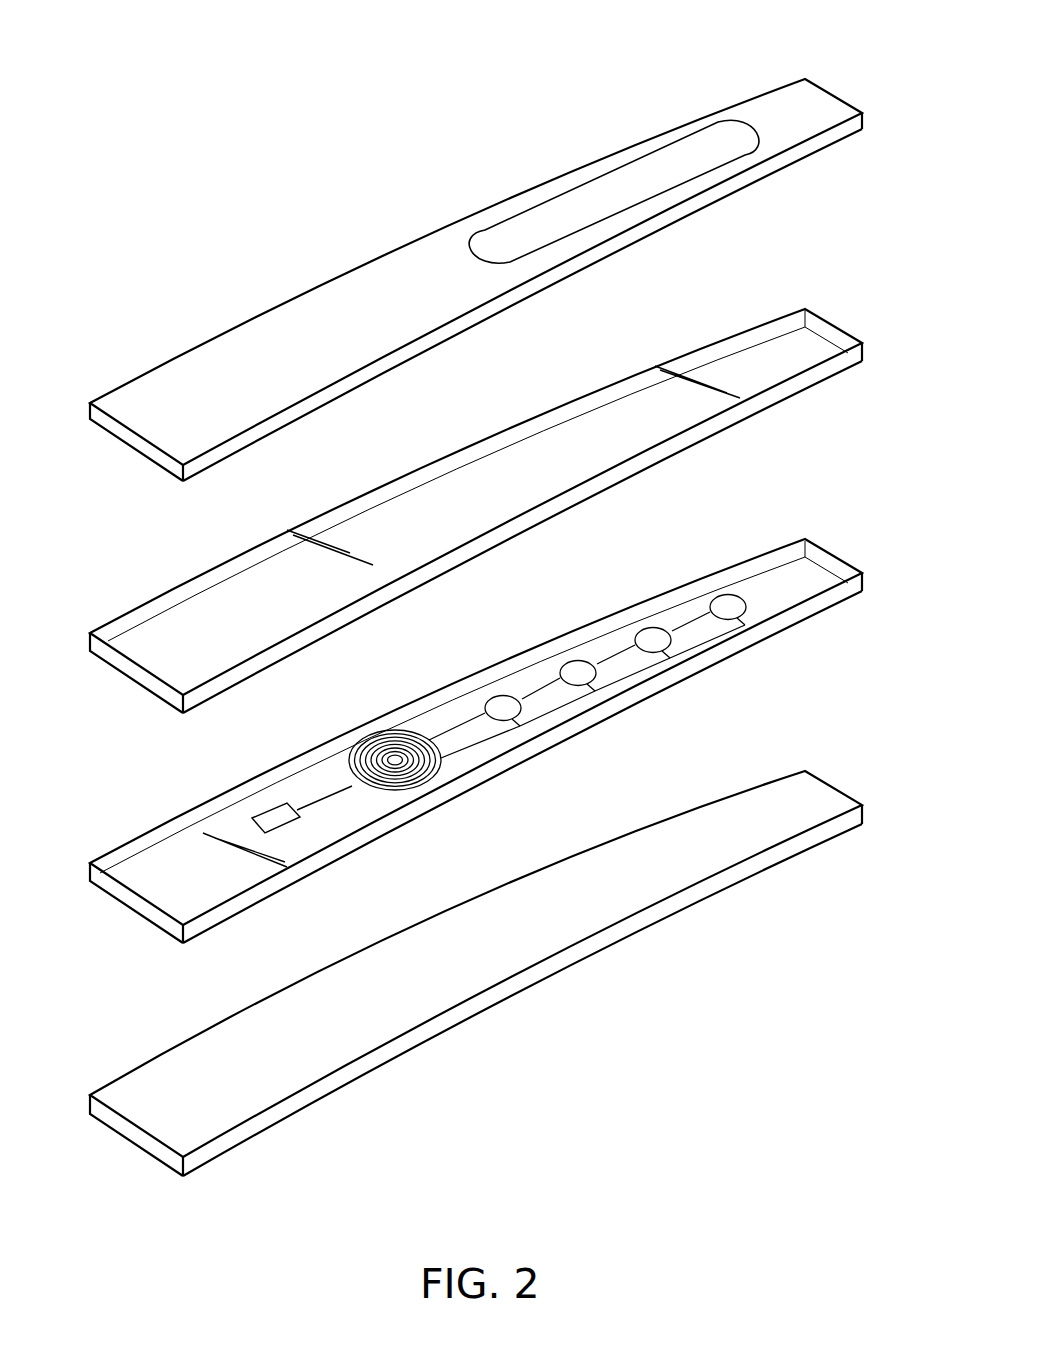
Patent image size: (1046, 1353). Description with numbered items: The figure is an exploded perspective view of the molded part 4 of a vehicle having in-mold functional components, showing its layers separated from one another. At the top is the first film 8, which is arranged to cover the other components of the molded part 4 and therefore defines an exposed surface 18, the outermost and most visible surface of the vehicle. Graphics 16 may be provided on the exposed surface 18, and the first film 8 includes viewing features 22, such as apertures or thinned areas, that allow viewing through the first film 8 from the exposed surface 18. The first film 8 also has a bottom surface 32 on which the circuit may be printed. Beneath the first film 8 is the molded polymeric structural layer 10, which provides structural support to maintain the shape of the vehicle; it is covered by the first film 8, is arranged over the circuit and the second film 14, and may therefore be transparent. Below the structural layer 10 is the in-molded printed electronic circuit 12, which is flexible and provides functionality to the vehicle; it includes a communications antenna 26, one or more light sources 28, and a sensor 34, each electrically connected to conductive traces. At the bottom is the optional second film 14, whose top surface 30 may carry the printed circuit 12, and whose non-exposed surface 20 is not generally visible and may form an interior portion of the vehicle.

The molded part 4 is at (132, 166).
The first film 8 is at (503, 243).
The molded polymeric structural layer 10 is at (842, 330).
The in-molded printed electronic circuit 12 is at (515, 732).
The second film 14 is at (516, 936).
The graphics 16 is at (230, 348).
The exposed surface 18 is at (803, 96).
The non-exposed surface 20 is at (773, 874).
The viewing features 22 is at (590, 178).
The communications antenna 26 is at (422, 784).
The light sources 28 is at (770, 634).
The top surface 30 is at (773, 794).
The bottom surface 32 is at (767, 185).
The sensor 34 is at (290, 826).